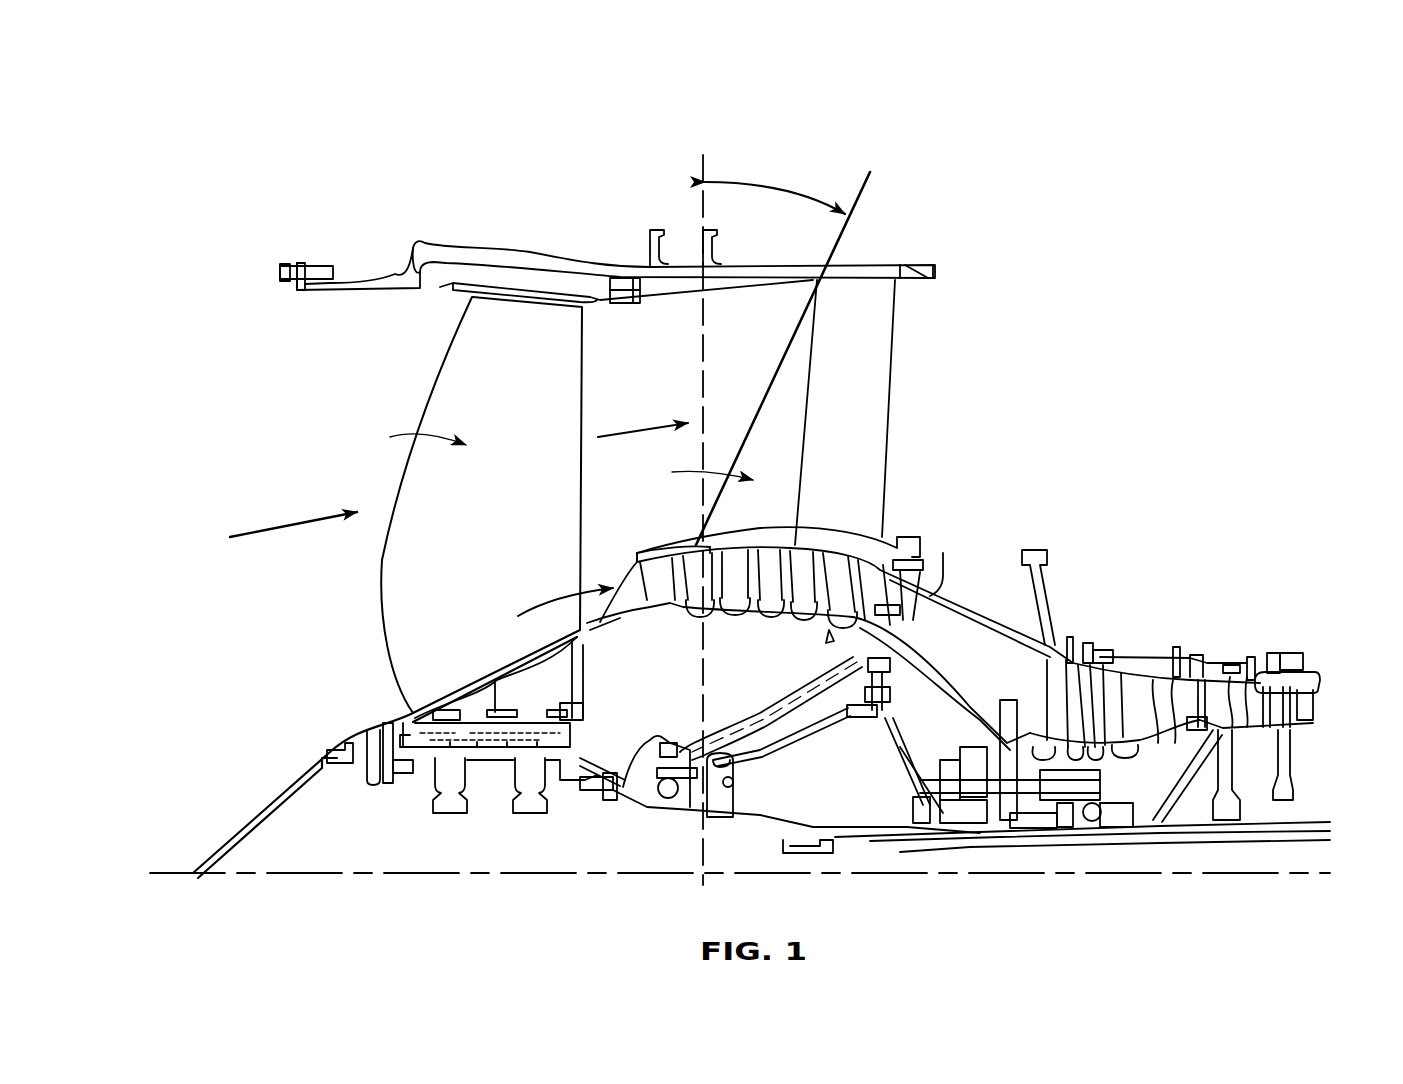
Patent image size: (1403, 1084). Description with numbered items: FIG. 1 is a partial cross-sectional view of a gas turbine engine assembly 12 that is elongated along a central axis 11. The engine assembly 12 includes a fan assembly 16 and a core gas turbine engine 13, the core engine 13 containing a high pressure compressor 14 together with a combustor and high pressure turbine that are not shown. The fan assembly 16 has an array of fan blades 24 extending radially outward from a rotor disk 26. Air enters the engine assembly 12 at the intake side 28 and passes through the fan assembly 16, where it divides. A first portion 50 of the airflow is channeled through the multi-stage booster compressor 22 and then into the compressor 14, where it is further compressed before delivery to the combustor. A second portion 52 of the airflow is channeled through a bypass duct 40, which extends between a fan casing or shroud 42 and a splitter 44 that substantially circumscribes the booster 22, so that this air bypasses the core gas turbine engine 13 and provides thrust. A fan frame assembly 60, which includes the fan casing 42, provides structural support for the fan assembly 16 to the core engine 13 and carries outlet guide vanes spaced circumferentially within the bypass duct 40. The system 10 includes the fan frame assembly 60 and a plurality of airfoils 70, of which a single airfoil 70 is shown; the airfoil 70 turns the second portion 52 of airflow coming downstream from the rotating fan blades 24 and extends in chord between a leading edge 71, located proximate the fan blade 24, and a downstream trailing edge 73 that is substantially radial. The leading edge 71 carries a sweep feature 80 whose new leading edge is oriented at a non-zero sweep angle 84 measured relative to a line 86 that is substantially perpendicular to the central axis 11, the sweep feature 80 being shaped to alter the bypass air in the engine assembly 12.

The system 10 is at (928, 94).
The central axis 11 is at (432, 868).
The gas turbine engine assembly 12 is at (536, 128).
The core gas turbine engine 13 is at (1265, 592).
The high pressure compressor 14 is at (1184, 640).
The fan assembly 16 is at (410, 439).
The multi-stage booster compressor 22 is at (798, 540).
The fan blades 24 is at (450, 398).
The rotor disk 26 is at (458, 713).
The intake side 28 is at (280, 523).
The bypass duct 40 is at (780, 493).
The fan casing or shroud 42 is at (678, 297).
The splitter 44 is at (664, 547).
The first portion of the airflow 50 is at (532, 603).
The second portion of the airflow 52 is at (642, 420).
The fan frame assembly 60 is at (891, 240).
The airfoil 70 is at (797, 313).
The leading edge 71 is at (802, 456).
The trailing edge 73 is at (888, 428).
The sweep feature 80 is at (695, 473).
The sweep angle 84 is at (781, 181).
The line 86 is at (700, 197).